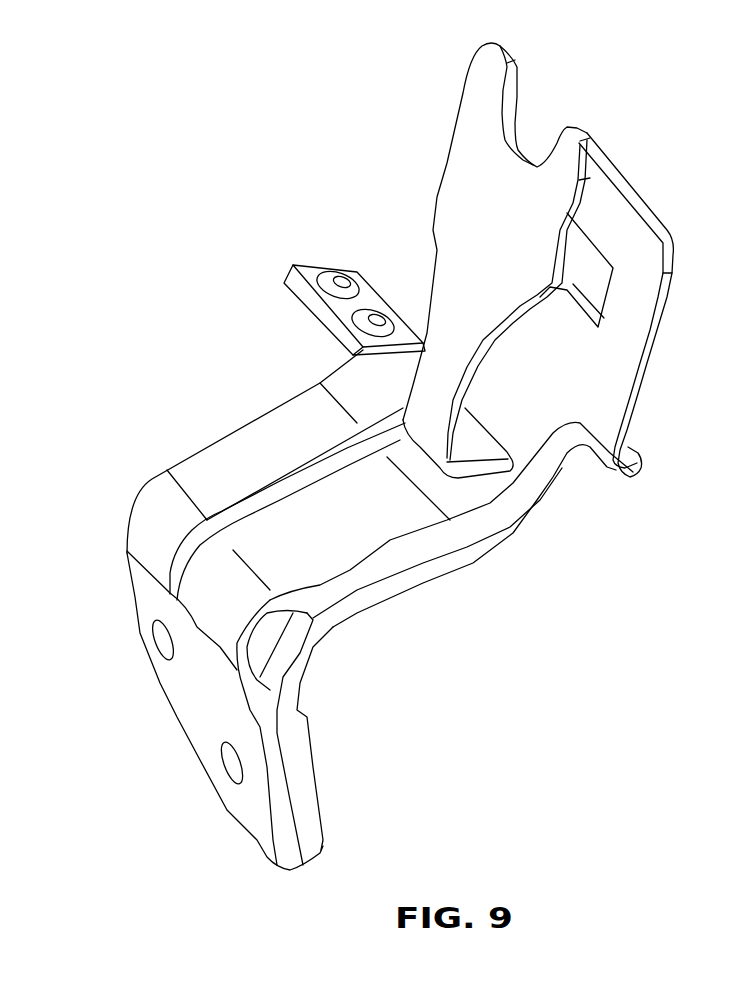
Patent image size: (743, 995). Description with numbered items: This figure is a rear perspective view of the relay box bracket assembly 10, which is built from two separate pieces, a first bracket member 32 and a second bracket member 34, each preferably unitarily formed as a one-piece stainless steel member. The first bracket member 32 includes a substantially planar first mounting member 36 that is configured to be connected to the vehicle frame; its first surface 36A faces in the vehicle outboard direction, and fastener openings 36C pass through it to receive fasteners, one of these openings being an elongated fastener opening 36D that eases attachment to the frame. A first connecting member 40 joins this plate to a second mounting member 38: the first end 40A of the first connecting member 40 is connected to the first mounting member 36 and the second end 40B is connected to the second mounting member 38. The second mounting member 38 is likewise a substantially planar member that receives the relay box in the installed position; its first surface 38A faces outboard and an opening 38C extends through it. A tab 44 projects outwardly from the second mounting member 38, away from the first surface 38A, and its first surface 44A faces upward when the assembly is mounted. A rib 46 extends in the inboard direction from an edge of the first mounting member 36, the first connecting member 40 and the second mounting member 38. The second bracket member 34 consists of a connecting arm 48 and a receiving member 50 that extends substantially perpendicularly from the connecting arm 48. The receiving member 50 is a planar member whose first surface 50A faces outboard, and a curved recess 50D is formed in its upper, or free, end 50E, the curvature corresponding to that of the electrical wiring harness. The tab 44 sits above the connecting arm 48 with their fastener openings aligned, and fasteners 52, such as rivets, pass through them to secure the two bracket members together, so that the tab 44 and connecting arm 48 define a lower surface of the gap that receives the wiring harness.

The relay box bracket assembly 10 is at (210, 316).
The first bracket member 32 is at (652, 395).
The second bracket member 34 is at (427, 176).
The first mounting member 36 is at (167, 703).
The first surface 36A is at (203, 697).
The fastener opening 36C is at (157, 650).
The elongated fastener opening 36D is at (237, 782).
The second mounting member 38 is at (660, 327).
The first surface 38A is at (638, 257).
The opening 38C is at (587, 231).
The first connecting member 40 is at (240, 427).
The first end 40A is at (128, 500).
The second end 40B is at (335, 367).
The tab 44 is at (313, 263).
The first surface 44A is at (373, 303).
The rib 46 is at (385, 597).
The connecting arm 48 is at (470, 480).
The receiving member 50 is at (463, 96).
The first surface 50A is at (510, 268).
The recess 50D is at (520, 130).
The upper end 50E is at (512, 48).
The fastener 52 is at (330, 280).